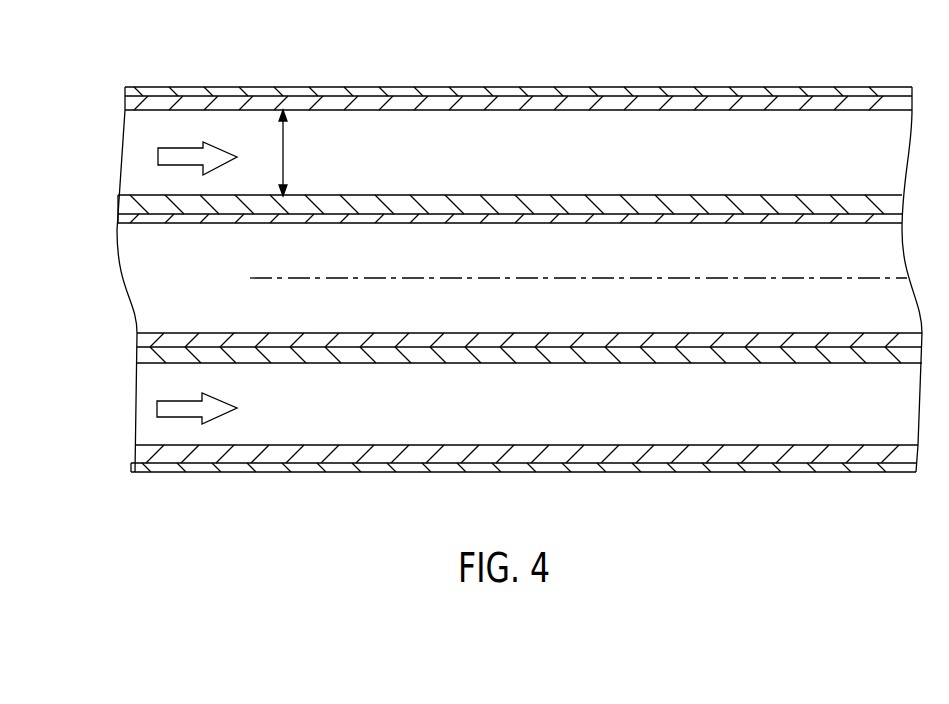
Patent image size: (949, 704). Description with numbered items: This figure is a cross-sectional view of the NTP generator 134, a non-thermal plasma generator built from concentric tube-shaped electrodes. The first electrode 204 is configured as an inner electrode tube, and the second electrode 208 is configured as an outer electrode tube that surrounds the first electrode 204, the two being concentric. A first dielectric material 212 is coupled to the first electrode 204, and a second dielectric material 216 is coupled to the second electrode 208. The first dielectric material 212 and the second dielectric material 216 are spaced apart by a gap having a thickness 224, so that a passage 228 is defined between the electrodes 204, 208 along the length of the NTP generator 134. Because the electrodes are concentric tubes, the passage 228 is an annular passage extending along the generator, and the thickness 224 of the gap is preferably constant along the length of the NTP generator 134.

The NTP generator 134 is at (676, 77).
The first electrode 204 is at (175, 335).
The second electrode 208 is at (197, 89).
The first dielectric material 212 is at (137, 206).
The second dielectric material 216 is at (140, 107).
The thickness 224 is at (283, 142).
The passage 228 is at (353, 414).